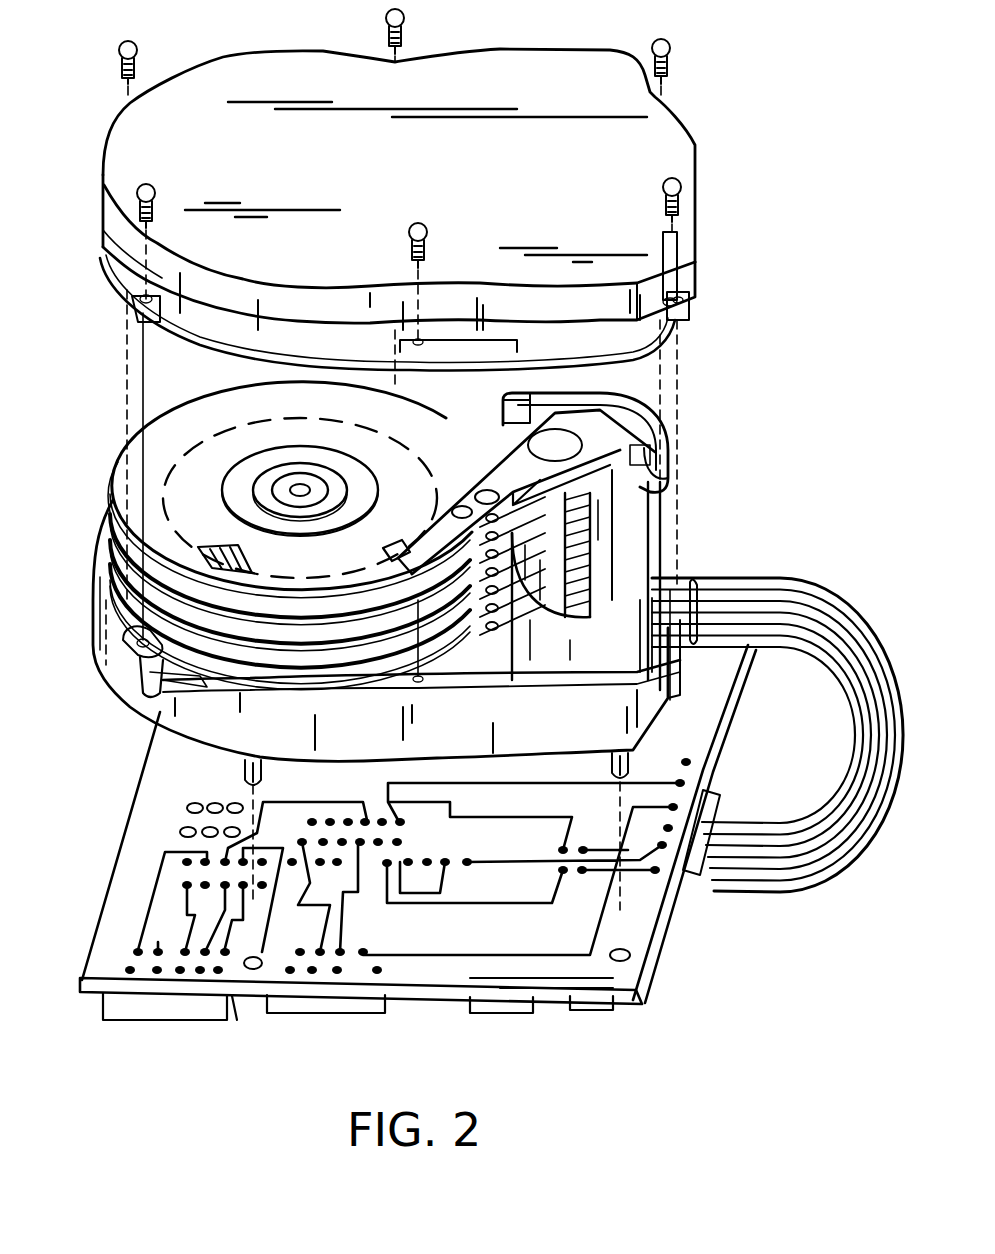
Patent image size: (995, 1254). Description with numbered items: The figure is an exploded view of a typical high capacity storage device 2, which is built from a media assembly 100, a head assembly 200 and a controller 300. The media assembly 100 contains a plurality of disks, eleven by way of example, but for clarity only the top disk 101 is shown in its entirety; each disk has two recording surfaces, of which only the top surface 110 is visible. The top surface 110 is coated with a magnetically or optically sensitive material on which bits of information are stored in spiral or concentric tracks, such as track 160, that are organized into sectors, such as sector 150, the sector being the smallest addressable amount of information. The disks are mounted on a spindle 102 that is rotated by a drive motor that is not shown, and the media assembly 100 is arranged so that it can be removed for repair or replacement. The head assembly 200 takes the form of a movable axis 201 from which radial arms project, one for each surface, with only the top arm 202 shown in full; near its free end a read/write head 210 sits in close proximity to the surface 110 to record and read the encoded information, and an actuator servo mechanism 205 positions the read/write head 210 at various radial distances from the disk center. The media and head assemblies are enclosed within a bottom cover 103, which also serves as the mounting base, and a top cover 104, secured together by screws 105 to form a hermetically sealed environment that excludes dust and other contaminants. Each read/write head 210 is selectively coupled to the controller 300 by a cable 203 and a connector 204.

The storage device 2 is at (708, 126).
The media assembly 100 is at (110, 523).
The top disk 101 is at (113, 464).
The spindle 102 is at (303, 486).
The bottom cover 103 is at (110, 643).
The top cover 104 is at (133, 135).
The screws 105 is at (135, 58).
The top surface 110 is at (183, 430).
The sector 150 is at (220, 546).
The track 160 is at (227, 422).
The head assembly 200 is at (648, 413).
The movable axis 201 is at (560, 452).
The top arm 202 is at (645, 450).
The cable 203 is at (792, 605).
The connector 204 is at (710, 800).
The actuator servo mechanism 205 is at (656, 439).
The read/write head 210 is at (400, 551).
The controller 300 is at (662, 925).